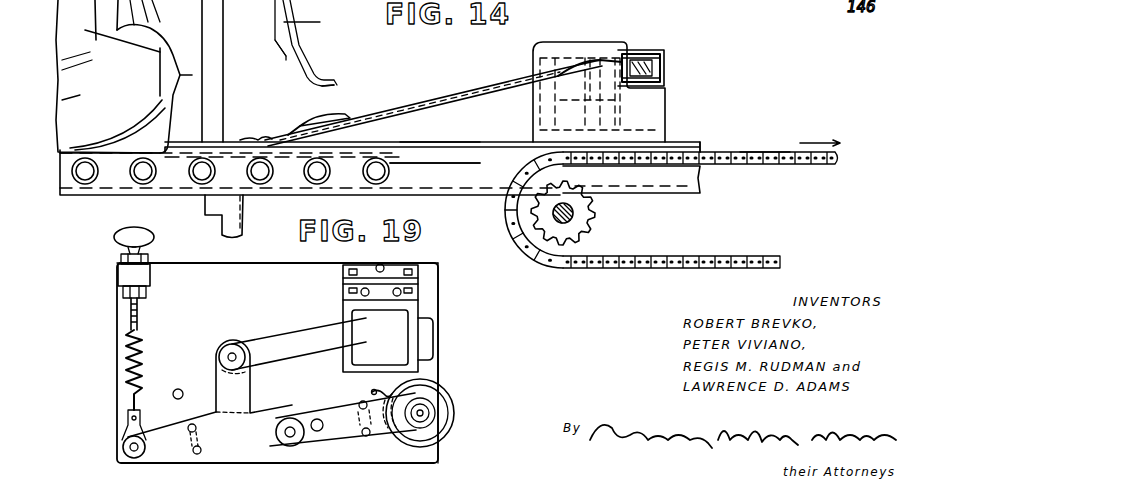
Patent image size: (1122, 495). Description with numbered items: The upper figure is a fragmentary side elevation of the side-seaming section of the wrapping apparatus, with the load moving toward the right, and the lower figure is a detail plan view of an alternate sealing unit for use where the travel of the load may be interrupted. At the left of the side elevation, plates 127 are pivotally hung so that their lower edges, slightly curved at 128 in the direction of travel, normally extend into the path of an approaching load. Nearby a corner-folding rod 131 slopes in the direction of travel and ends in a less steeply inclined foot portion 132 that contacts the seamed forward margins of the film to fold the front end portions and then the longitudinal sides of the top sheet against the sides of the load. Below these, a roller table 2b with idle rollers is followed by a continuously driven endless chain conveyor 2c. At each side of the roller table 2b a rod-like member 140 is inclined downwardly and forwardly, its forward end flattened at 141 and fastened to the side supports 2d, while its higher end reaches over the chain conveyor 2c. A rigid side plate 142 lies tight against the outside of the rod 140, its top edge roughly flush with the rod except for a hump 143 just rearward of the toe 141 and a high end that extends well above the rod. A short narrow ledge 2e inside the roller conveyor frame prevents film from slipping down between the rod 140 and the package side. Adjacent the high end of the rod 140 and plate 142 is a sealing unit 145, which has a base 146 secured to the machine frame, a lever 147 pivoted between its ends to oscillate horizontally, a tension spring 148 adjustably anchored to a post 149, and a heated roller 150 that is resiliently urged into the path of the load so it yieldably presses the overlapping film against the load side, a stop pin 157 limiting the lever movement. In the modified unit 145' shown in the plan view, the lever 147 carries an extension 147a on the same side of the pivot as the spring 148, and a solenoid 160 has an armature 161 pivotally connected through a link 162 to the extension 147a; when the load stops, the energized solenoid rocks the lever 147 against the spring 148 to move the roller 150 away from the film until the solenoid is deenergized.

In FIG. 14, the plates 127 is at (296, 24).
In FIG. 14, the curved lower edge 128 is at (282, 58).
In FIG. 14, the corner-folding rod 131 is at (310, 40).
In FIG. 14, the foot portion 132 is at (338, 80).
In FIG. 14, the rod-like member 140 is at (433, 97).
In FIG. 14, the flattened forward end 141 is at (257, 137).
In FIG. 14, the side plate 142 is at (503, 126).
In FIG. 14, the hump 143 is at (338, 116).
In FIG. 14, the sealing unit 145 is at (653, 50).
In FIG. 19, the modified sealing unit 145' is at (469, 363).
In FIG. 14, the base 146 is at (658, 118).
In FIG. 19, the base 146 is at (188, 283).
In FIG. 14, the lever 147 is at (628, 52).
In FIG. 19, the lever 147 is at (336, 410).
In FIG. 19, the lever extension 147a is at (220, 385).
In FIG. 19, the tension spring 148 is at (128, 350).
In FIG. 19, the post 149 is at (118, 280).
In FIG. 14, the heated roller 150 is at (662, 68).
In FIG. 19, the heated roller 150 is at (455, 414).
In FIG. 19, the stop pin 157 is at (179, 389).
In FIG. 19, the solenoid 160 is at (361, 325).
In FIG. 19, the armature 161 is at (430, 344).
In FIG. 19, the link 162 is at (266, 335).
In FIG. 14, the roller table 2b is at (126, 188).
In FIG. 14, the endless chain conveyor 2c is at (761, 146).
In FIG. 14, the side supports 2d is at (437, 143).
In FIG. 14, the ledge 2e is at (485, 165).